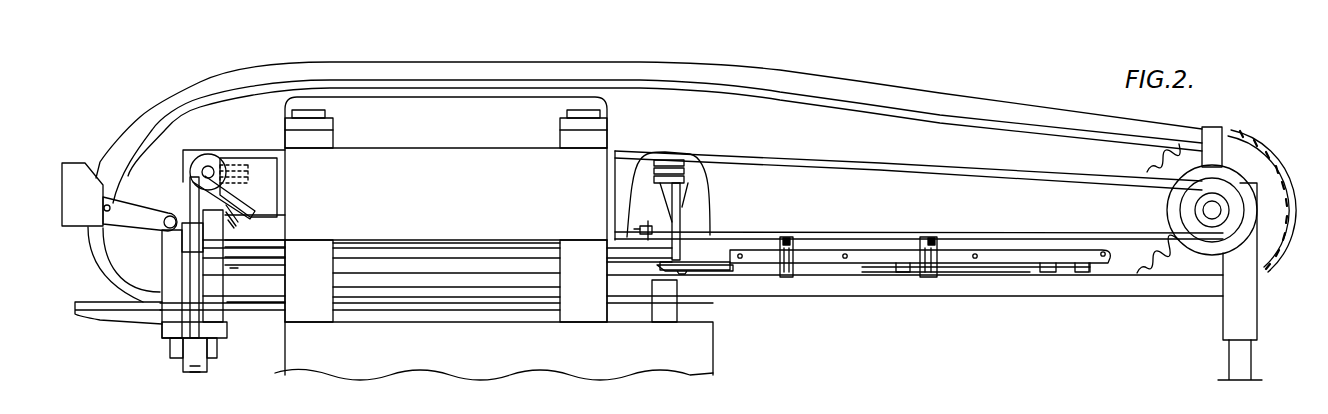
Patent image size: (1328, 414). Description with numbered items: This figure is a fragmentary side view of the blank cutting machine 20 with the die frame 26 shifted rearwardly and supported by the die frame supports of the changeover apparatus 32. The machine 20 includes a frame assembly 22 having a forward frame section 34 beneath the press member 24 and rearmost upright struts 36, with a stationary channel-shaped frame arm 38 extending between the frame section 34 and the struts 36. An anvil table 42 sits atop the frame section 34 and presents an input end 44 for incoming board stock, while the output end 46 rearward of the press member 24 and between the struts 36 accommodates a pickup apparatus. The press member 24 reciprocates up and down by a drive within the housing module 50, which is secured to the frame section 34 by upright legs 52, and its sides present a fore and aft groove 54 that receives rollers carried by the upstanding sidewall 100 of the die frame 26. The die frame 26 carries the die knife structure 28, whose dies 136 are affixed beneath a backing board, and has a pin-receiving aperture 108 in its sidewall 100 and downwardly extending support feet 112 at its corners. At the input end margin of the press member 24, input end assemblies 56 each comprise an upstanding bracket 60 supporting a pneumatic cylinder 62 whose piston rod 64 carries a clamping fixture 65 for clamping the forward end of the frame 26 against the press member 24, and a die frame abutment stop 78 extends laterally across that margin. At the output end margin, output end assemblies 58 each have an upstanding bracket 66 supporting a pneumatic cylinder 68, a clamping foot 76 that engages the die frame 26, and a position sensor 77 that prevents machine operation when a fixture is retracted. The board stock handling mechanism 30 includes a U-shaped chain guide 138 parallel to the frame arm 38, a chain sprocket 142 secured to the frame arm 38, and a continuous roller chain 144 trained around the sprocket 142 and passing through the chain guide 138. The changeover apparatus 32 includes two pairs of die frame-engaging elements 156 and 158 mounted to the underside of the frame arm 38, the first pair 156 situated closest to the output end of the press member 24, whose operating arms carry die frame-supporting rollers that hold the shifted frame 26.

The blank cutting machine 20 is at (140, 91).
The frame assembly 22 is at (1218, 340).
The press member 24 is at (388, 272).
The die frame 26 is at (1060, 273).
The die knife structure 28 is at (876, 280).
The board stock handling mechanism 30 is at (1275, 174).
The changeover apparatus 32 is at (935, 285).
The forward frame section 34 is at (290, 368).
The upright struts 36 is at (1246, 355).
The frame arm 38 is at (945, 178).
The anvil table 42 is at (706, 318).
The input end 44 is at (140, 349).
The output end 46 is at (1148, 350).
The housing module 50 is at (446, 125).
The upright legs 52 is at (312, 300).
The groove 54 is at (535, 250).
The input end piston and cylinder assemblies 56 is at (237, 157).
The output end piston and cylinder assemblies 58 is at (683, 157).
The upstanding bracket 60 is at (228, 205).
The pneumatic cylinder 62 is at (243, 205).
The piston rod 64 is at (235, 232).
The clamping fixture 65 is at (238, 269).
The upstanding bracket 66 is at (688, 227).
The pneumatic cylinder 68 is at (668, 160).
The clamping foot 76 is at (690, 185).
The position sensor 77 is at (648, 226).
The die frame abutment stop 78 is at (230, 266).
The upstanding sidewall 100 is at (832, 262).
The pin-receiving aperture 108 is at (887, 255).
The support feet 112 is at (1083, 270).
The dies 136 is at (1025, 270).
The chain guide 138 is at (972, 104).
The chain sprocket 142 is at (1267, 242).
The roller chain 144 is at (1238, 134).
The die frame-engaging elements 156 is at (790, 228).
The die frame-engaging elements 158 is at (940, 228).